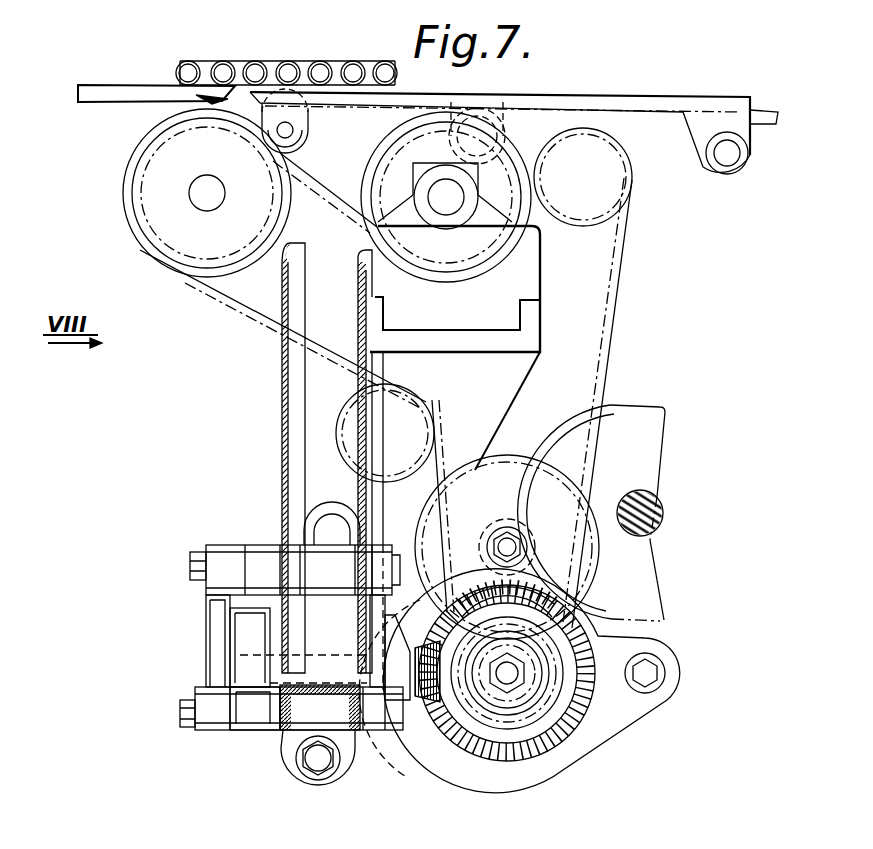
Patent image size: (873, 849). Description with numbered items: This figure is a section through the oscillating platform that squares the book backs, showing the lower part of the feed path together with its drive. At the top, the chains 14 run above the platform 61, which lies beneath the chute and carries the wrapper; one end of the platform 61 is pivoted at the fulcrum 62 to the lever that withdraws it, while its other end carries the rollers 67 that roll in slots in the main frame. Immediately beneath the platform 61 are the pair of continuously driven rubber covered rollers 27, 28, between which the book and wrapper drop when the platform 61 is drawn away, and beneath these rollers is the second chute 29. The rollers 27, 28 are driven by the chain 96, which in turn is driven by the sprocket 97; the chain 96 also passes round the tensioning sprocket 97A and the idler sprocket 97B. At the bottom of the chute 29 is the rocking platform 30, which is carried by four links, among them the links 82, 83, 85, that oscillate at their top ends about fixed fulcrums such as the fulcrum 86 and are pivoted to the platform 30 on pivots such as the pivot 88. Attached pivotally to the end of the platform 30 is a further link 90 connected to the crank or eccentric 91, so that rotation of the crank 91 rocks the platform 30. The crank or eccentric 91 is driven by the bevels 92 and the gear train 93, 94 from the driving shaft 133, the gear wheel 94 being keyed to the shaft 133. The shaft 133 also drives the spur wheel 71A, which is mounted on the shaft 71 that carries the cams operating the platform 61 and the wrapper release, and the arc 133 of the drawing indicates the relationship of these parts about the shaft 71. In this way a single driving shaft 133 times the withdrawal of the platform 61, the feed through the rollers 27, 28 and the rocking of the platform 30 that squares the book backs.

The chain 14 is at (303, 66).
The platform 61 is at (593, 95).
The fulcrum 62 is at (718, 157).
The rollers 67 is at (308, 137).
The rubber covered roller 27 is at (167, 223).
The rubber covered roller 28 is at (452, 245).
The second chute 29 is at (317, 370).
The tensioning sprocket 97A is at (400, 410).
The idler sprocket 97B is at (595, 193).
The chain 96 is at (616, 285).
The gear wheel 94 is at (502, 477).
The spur wheel 71A is at (635, 422).
The shaft 71 is at (658, 506).
The driving shaft 133 is at (640, 548).
The fixed fulcrum 86 is at (262, 557).
The link 82 is at (217, 605).
The link 90 is at (238, 625).
The pivot 88 is at (198, 702).
The rocking platform 30 is at (270, 698).
The crank or eccentric 91 is at (290, 763).
The link 83 is at (380, 680).
The link 85 is at (420, 717).
The bevels 92 is at (470, 735).
The gear 93 is at (500, 707).
The sprocket 97 is at (563, 740).